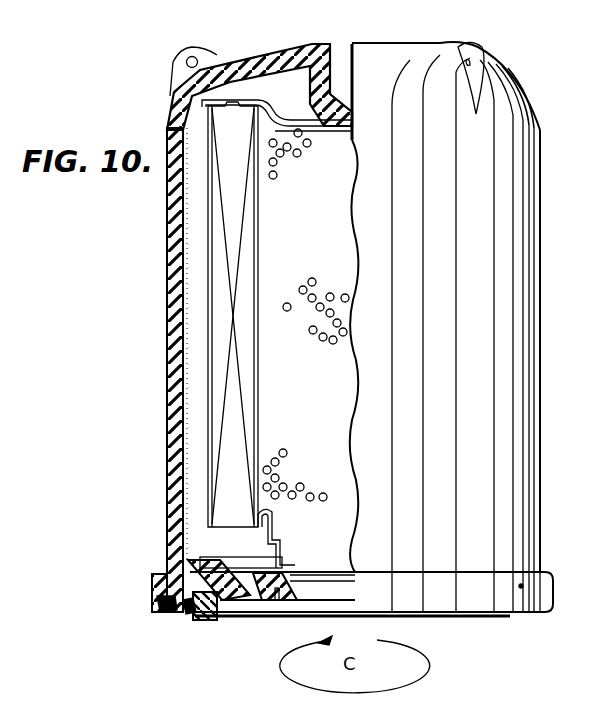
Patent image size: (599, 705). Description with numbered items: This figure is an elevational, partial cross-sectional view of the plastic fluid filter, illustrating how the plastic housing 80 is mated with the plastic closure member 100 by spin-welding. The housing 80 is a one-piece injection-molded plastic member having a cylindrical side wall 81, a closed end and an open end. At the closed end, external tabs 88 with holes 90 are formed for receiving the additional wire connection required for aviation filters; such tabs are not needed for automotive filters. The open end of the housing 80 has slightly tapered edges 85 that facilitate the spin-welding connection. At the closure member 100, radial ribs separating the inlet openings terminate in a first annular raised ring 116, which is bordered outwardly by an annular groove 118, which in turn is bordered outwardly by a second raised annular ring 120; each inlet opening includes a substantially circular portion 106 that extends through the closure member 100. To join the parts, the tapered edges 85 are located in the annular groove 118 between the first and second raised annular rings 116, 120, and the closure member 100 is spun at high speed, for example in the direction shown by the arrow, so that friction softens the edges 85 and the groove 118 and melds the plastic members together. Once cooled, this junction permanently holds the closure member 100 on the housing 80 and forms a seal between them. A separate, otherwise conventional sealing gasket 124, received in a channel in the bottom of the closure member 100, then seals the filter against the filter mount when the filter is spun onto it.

The housing 80 is at (297, 46).
The cylindrical side wall 81 is at (167, 290).
The tapered edges 85 is at (156, 602).
The external tabs 88 is at (200, 50).
The holes 90 is at (470, 46).
The closure member 100 is at (532, 614).
The circular portion 106 is at (248, 598).
The first annular raised ring 116 is at (194, 562).
The annular groove 118 is at (164, 606).
The second raised annular ring 120 is at (152, 582).
The sealing gasket 124 is at (204, 622).